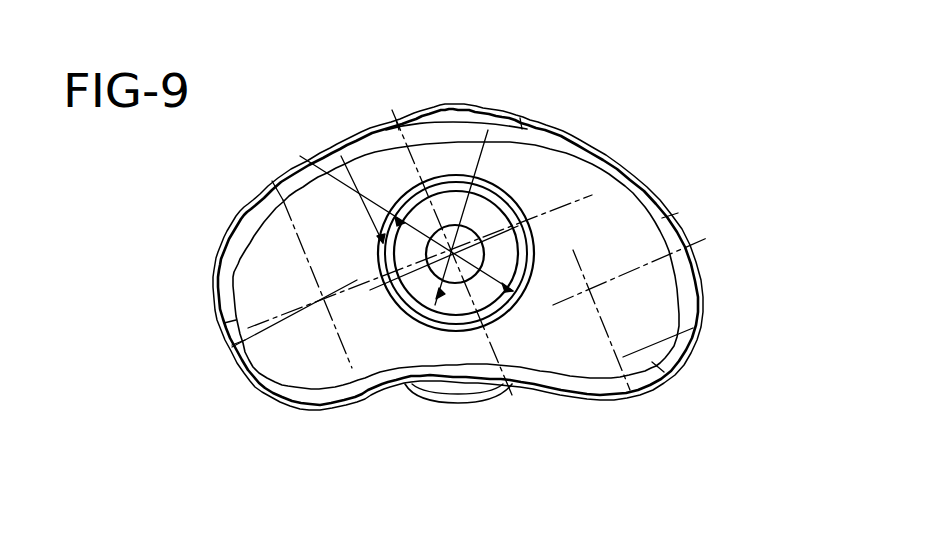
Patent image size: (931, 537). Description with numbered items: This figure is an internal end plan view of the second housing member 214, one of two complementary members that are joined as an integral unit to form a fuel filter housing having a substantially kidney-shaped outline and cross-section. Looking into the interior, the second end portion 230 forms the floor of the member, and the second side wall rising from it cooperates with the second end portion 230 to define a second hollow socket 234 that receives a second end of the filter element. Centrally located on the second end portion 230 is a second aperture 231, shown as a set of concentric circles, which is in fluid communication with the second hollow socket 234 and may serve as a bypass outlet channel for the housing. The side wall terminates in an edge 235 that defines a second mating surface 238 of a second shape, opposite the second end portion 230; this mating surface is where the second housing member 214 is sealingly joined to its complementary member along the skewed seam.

The second housing member 214 is at (646, 167).
The second end portion 230 is at (633, 262).
The second aperture 231 is at (445, 231).
The second hollow socket 234 is at (624, 298).
The edge 235 is at (598, 385).
The second mating surface 238 is at (223, 278).